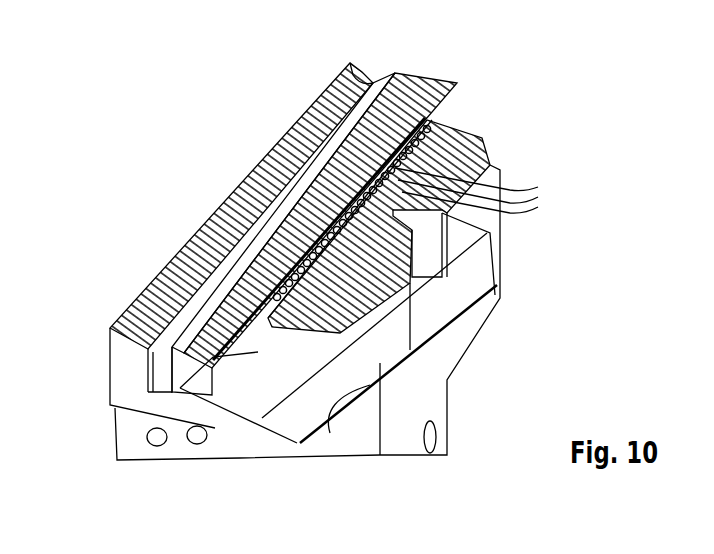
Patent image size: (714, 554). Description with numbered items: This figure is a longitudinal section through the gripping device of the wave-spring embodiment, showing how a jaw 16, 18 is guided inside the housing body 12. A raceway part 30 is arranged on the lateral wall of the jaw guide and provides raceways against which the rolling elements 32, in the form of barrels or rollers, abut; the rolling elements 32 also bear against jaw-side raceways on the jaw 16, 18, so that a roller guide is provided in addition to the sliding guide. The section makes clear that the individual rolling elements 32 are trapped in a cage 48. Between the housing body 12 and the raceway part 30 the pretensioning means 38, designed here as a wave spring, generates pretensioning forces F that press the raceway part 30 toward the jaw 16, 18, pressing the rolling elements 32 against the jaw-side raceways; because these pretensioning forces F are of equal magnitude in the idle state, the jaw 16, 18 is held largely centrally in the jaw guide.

The housing body 12 is at (250, 197).
The pretensioning means 38 is at (393, 78).
The raceway part 30 is at (420, 97).
The cage 48 is at (410, 155).
The rolling elements 32 is at (486, 190).
The jaw 16 is at (347, 290).
The jaw 18 is at (373, 310).
The pretensioning forces F is at (350, 189).